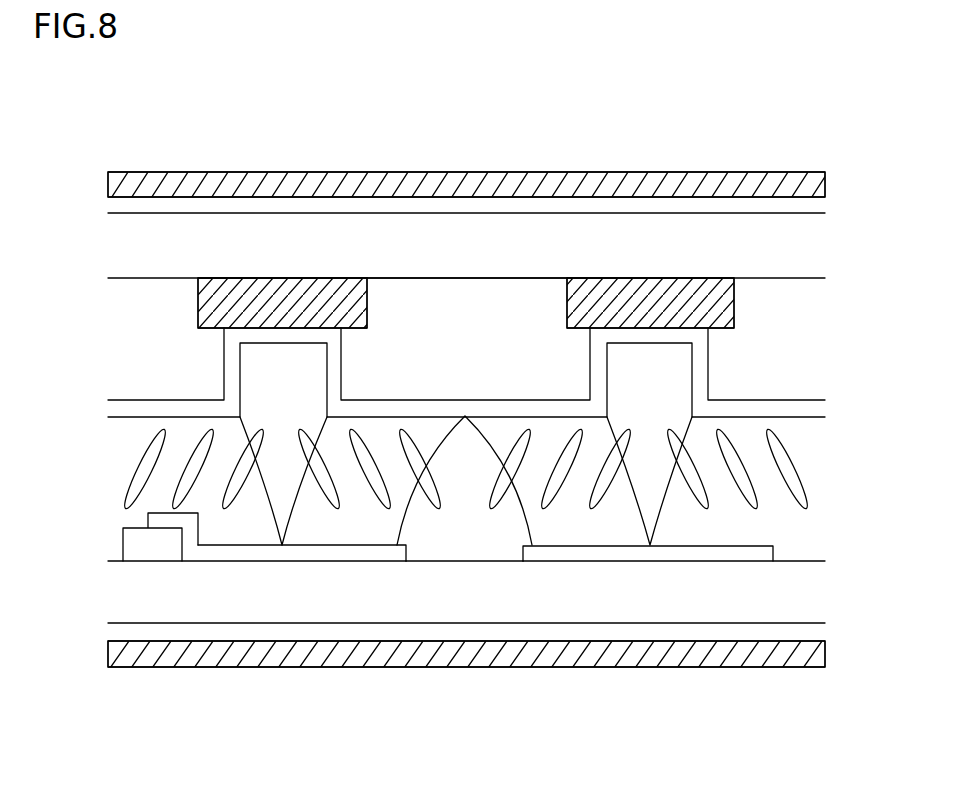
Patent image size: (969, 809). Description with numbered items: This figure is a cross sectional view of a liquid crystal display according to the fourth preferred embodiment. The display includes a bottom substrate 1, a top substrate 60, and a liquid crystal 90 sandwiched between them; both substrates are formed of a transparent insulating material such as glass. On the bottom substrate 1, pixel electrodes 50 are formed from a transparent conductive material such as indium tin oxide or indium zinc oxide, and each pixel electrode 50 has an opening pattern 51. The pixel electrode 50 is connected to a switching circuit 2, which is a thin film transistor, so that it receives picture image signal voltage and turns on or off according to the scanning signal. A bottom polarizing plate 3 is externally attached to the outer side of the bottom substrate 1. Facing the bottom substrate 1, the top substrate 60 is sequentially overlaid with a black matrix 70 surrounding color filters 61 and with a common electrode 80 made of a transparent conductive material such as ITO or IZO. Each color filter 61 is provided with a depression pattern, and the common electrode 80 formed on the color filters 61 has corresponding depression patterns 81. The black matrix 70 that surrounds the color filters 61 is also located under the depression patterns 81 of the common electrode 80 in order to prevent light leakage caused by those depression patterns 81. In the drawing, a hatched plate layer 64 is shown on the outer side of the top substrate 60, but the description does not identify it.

The bottom substrate 1 is at (315, 617).
The switching circuit 2 is at (153, 553).
The bottom polarizing plate 3 is at (582, 658).
The pixel electrode 50 is at (390, 561).
The opening pattern 51 is at (463, 556).
The top substrate 60 is at (398, 222).
The color filter 61 is at (465, 295).
The upper polarizer 64 is at (523, 178).
The black matrix 70 is at (267, 285).
The common electrode 80 is at (522, 412).
The depression pattern 81 is at (283, 350).
The liquid crystal 90 is at (820, 470).